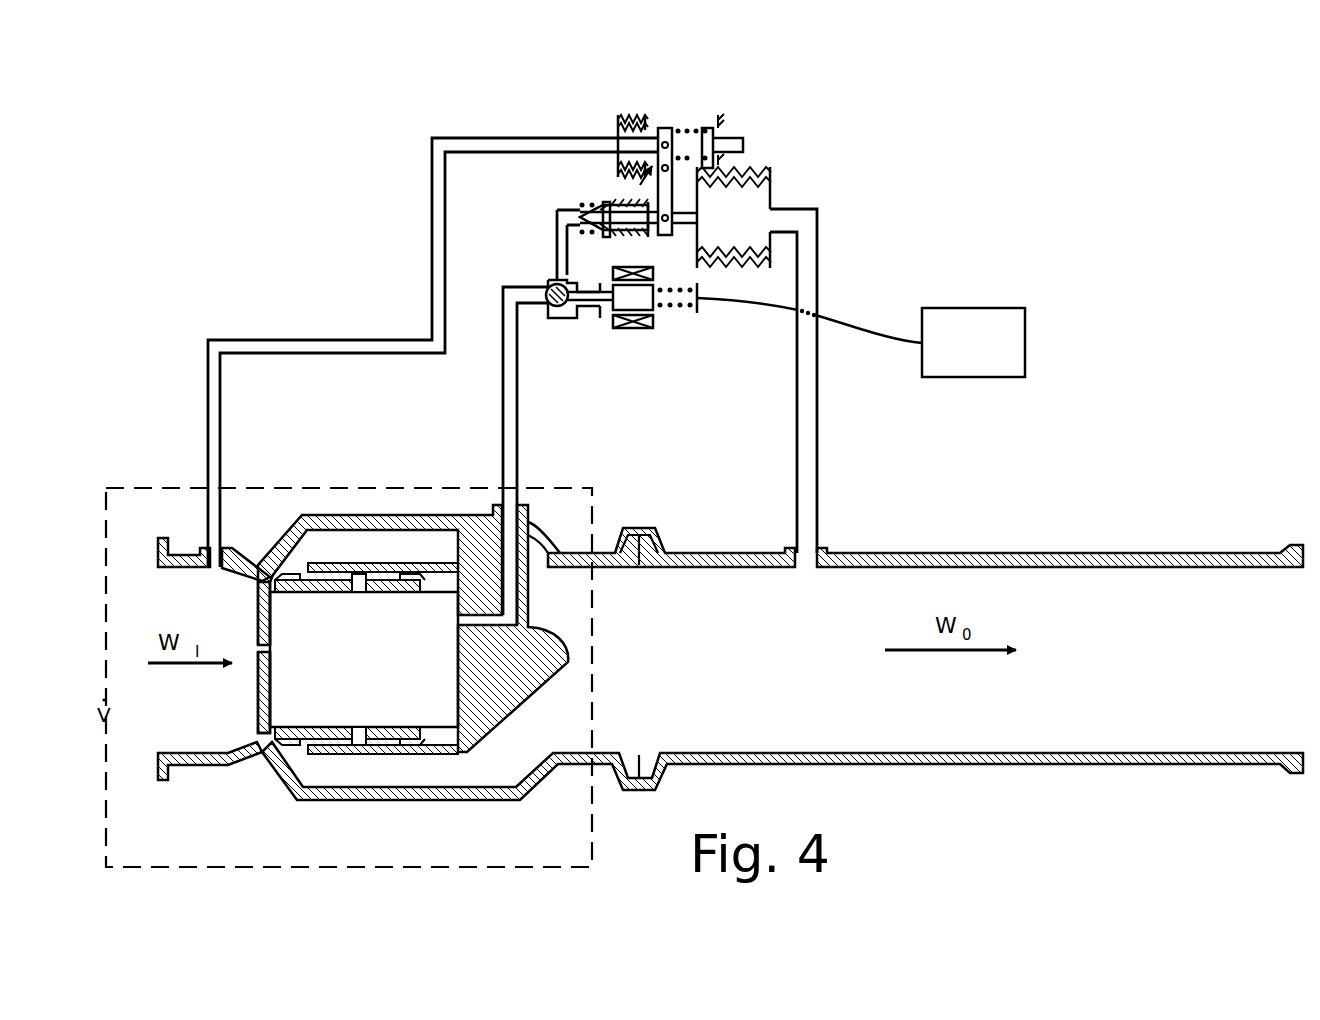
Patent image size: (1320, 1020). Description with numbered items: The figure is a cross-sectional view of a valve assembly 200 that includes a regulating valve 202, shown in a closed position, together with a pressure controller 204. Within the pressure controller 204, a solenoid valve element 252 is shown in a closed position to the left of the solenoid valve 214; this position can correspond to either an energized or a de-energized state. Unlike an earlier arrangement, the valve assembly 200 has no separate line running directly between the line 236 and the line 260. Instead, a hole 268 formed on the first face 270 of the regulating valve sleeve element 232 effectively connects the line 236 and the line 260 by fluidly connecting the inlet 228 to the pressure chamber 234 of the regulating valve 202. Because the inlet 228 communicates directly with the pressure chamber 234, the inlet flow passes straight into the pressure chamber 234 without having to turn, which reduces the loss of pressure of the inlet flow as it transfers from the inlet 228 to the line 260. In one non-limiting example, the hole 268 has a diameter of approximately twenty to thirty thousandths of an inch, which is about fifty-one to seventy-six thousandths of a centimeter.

The valve assembly 200 is at (315, 106).
The regulating valve 202 is at (343, 508).
The pressure controller 204 is at (865, 120).
The solenoid valve 214 is at (637, 340).
The inlet 228 is at (188, 570).
The regulating valve sleeve element 232 is at (252, 711).
The pressure chamber 234 is at (404, 659).
The line 236 is at (358, 338).
The solenoid valve element 252 is at (557, 308).
The line 260 is at (518, 473).
The hole 268 is at (272, 649).
The first face 270 is at (258, 697).